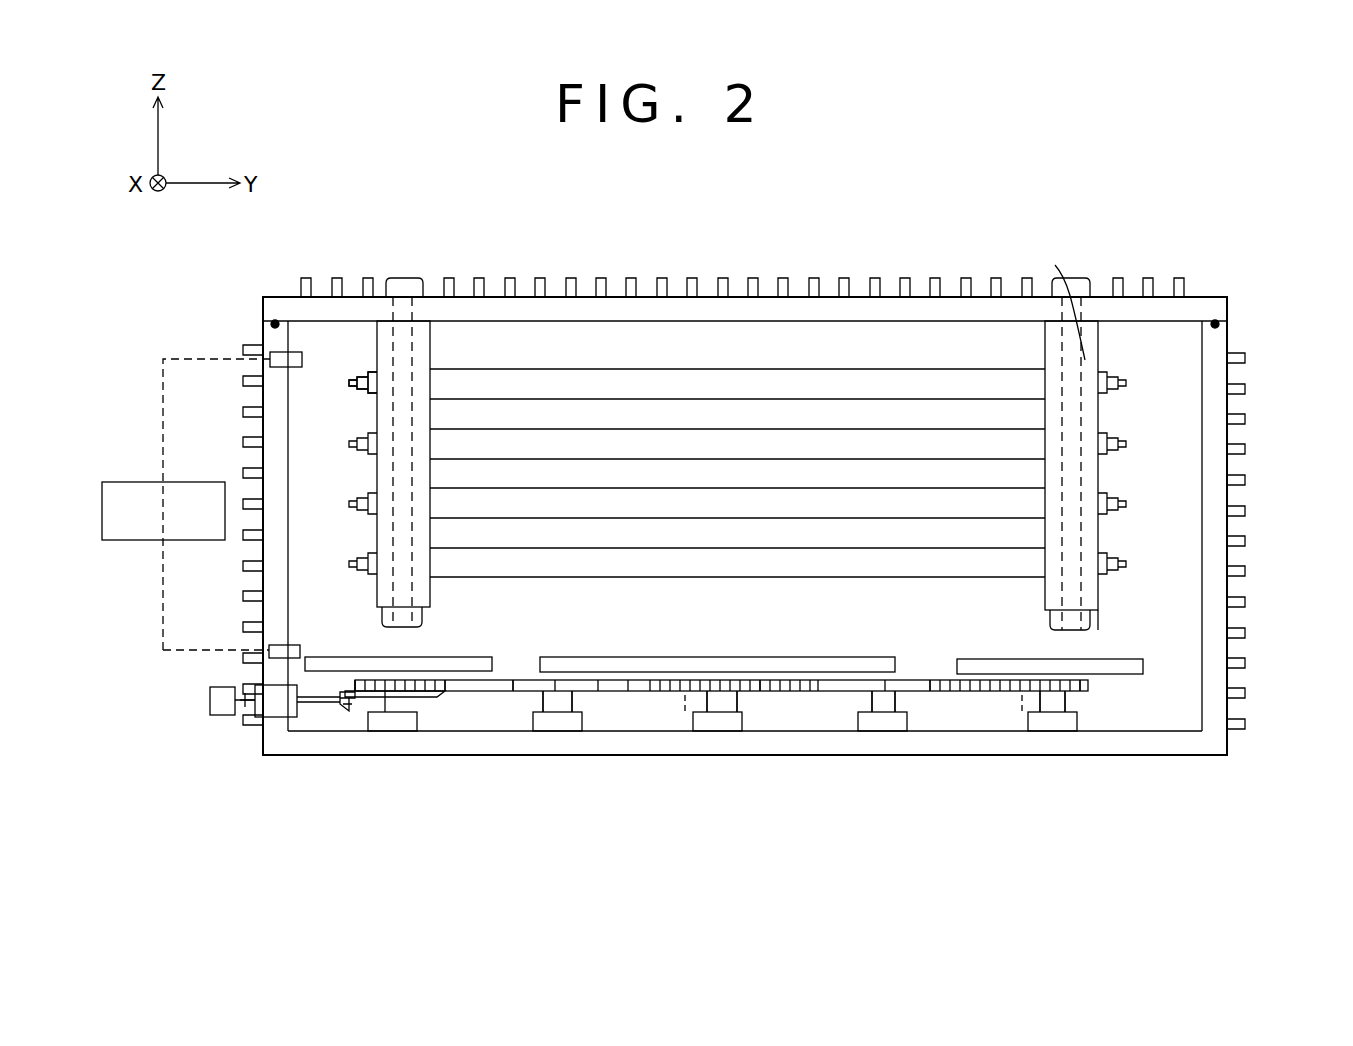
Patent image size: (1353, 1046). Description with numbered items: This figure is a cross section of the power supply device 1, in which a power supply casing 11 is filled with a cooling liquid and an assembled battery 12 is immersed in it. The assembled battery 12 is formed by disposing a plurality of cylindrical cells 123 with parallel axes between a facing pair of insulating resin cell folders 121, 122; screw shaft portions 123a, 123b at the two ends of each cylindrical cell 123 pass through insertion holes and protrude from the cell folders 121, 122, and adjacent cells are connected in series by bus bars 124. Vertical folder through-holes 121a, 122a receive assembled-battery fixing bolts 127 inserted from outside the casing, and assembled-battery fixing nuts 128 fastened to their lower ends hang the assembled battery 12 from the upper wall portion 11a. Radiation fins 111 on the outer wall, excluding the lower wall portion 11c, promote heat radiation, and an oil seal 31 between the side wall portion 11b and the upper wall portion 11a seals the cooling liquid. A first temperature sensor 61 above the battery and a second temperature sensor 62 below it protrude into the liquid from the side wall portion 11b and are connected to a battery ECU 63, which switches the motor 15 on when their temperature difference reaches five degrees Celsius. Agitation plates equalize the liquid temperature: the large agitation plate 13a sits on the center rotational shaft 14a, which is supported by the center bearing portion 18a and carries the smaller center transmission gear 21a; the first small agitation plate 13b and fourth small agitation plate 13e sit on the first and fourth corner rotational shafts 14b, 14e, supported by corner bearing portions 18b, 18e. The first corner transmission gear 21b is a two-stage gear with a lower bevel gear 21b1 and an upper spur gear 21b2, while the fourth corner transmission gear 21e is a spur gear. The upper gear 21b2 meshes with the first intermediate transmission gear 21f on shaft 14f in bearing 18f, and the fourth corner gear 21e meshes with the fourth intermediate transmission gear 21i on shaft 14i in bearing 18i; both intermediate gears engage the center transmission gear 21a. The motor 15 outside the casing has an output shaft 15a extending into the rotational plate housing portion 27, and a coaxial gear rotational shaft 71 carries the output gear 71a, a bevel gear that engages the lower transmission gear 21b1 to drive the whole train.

The power supply device 1 is at (968, 260).
The power supply casing 11 is at (1248, 326).
The upper wall portion 11a is at (1193, 292).
The side wall portion 11b is at (278, 433).
The lower wall portion 11c is at (1160, 748).
The assembled battery 12 is at (1128, 477).
The large agitation plate 13a is at (645, 660).
The first small agitation plate 13b is at (325, 665).
The fourth small agitation plate 13e is at (1120, 668).
The center rotational shaft 14a is at (718, 715).
The first corner rotational shaft 14b is at (400, 712).
The fourth corner rotational shaft 14e is at (1055, 712).
The first intermediate transmission gear rotational shaft 14f is at (558, 712).
The fourth intermediate transmission gear rotational shaft 14i is at (893, 708).
The motor 15 is at (210, 703).
The output shaft 15a is at (243, 718).
The center bearing portion 18a is at (728, 695).
The first corner bearing portion 18b is at (375, 700).
The fourth corner bearing portion 18e is at (1035, 705).
The first intermediate bearing portion 18f is at (578, 712).
The fourth intermediate bearing portion 18i is at (882, 715).
The center transmission gear 21a is at (765, 692).
The first corner transmission gear 21b is at (450, 705).
The lower transmission gear 21b1 is at (462, 700).
The upper transmission gear 21b2 is at (385, 720).
The fourth corner transmission gear 21e is at (1080, 695).
The first intermediate transmission gear 21f is at (517, 692).
The fourth intermediate transmission gear 21i is at (930, 692).
The rotational plate housing portion 27 is at (262, 720).
The oil seal 31 is at (275, 320).
The first temperature sensor 61 is at (283, 362).
The second temperature sensor 62 is at (269, 652).
The battery ECU 63 is at (112, 482).
The gear rotational shaft 71 is at (283, 720).
The output gear 71a is at (345, 706).
The radiation fins 111 is at (510, 278).
The cell folder 121 is at (385, 350).
The folder through-hole 121a is at (405, 300).
The cell folder 122 is at (1053, 348).
The folder through-hole 122a is at (1093, 300).
The cylindrical cell 123 is at (830, 385).
The screw shaft portion 123a is at (347, 383).
The screw shaft portion 123b is at (1126, 386).
The bus bar 124 is at (373, 477).
The assembled-battery fixing bolt 127 is at (1055, 265).
The assembled-battery fixing nut 128 is at (1090, 618).